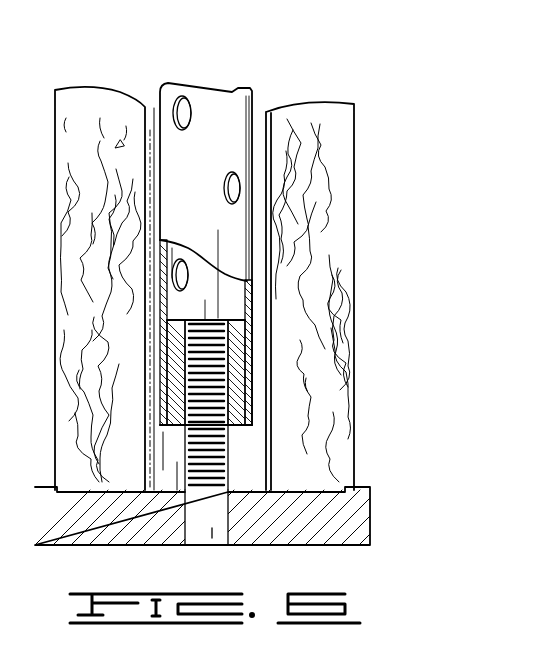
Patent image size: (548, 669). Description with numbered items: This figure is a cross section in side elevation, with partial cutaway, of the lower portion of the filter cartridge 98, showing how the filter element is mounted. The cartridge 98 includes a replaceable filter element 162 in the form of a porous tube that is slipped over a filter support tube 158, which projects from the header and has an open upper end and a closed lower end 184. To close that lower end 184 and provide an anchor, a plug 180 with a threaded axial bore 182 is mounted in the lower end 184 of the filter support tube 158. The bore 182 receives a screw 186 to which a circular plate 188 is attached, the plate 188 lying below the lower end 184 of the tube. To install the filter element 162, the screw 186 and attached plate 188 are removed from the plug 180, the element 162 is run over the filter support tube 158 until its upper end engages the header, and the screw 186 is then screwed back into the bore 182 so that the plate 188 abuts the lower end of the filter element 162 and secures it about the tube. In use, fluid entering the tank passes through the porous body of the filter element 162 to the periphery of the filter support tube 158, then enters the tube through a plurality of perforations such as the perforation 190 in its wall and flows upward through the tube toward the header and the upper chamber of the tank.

The filter cartridge 98 is at (355, 156).
The filter support tube 158 is at (240, 111).
The perforation 190 is at (228, 193).
The filter element 162 is at (346, 257).
The threaded axial bore 182 is at (226, 346).
The screw 186 is at (218, 383).
The plug 180 is at (248, 403).
The lower end 184 is at (250, 427).
The circular plate 188 is at (350, 524).